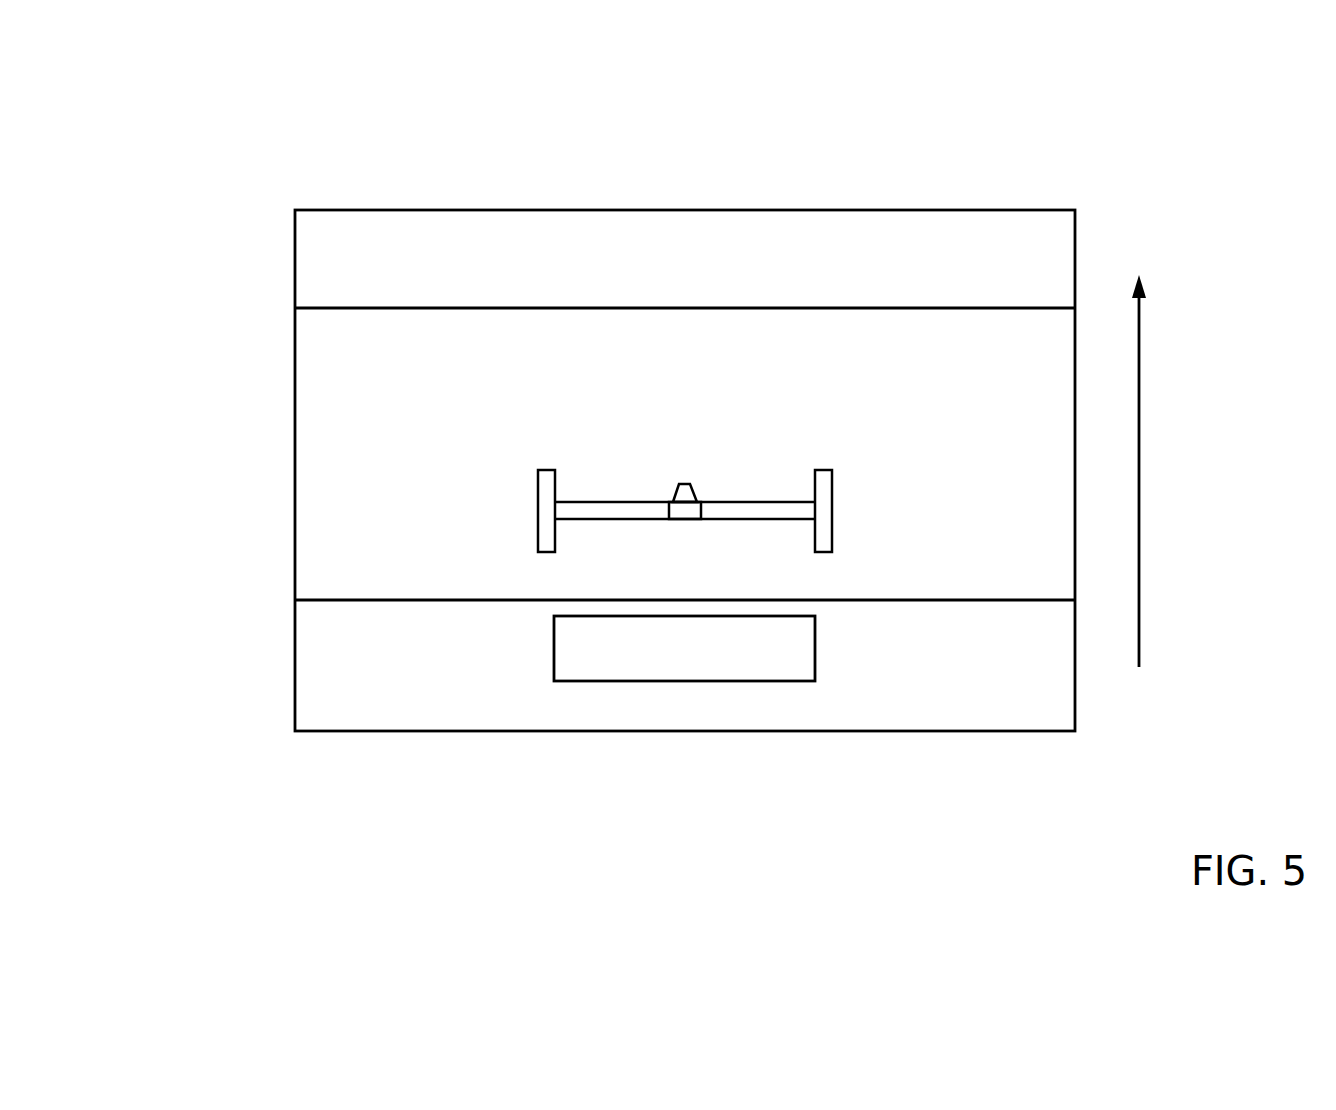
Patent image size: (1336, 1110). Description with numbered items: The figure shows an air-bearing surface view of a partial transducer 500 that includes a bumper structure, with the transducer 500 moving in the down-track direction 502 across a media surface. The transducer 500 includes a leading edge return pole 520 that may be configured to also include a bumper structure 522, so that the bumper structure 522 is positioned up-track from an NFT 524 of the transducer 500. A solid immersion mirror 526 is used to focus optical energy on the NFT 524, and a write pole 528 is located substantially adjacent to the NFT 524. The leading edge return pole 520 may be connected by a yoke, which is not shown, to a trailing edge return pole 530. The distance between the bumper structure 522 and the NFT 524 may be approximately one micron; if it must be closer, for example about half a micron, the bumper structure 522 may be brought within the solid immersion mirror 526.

The transducer 500 is at (214, 74).
The down-track direction 502 is at (1144, 462).
The leading edge return pole 520 is at (1014, 668).
The bumper structure 522 is at (704, 660).
The NFT 524 is at (666, 495).
The solid immersion mirror 526 is at (532, 508).
The write pole 528 is at (699, 485).
The trailing edge return pole 530 is at (670, 237).